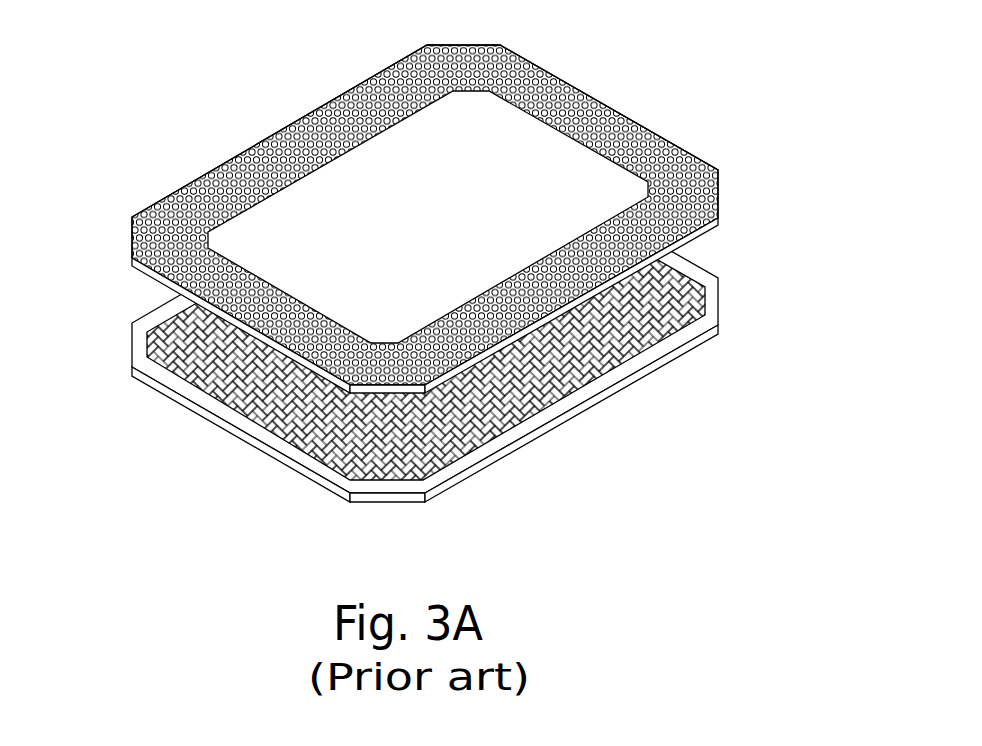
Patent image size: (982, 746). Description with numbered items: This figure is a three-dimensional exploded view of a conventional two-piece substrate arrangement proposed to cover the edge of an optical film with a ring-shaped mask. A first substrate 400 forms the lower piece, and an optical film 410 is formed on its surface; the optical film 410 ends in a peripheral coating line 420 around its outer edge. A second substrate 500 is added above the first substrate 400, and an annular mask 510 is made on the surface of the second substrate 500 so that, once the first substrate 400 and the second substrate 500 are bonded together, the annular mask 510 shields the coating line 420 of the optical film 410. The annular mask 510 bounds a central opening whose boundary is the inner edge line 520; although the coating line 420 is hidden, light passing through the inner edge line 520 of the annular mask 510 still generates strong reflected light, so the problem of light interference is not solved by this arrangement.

The first substrate 400 is at (369, 327).
The optical film 410 is at (240, 395).
The peripheral coating line 420 is at (164, 320).
The second substrate 500 is at (492, 197).
The annular mask 510 is at (425, 197).
The inner edge line 520 is at (402, 117).